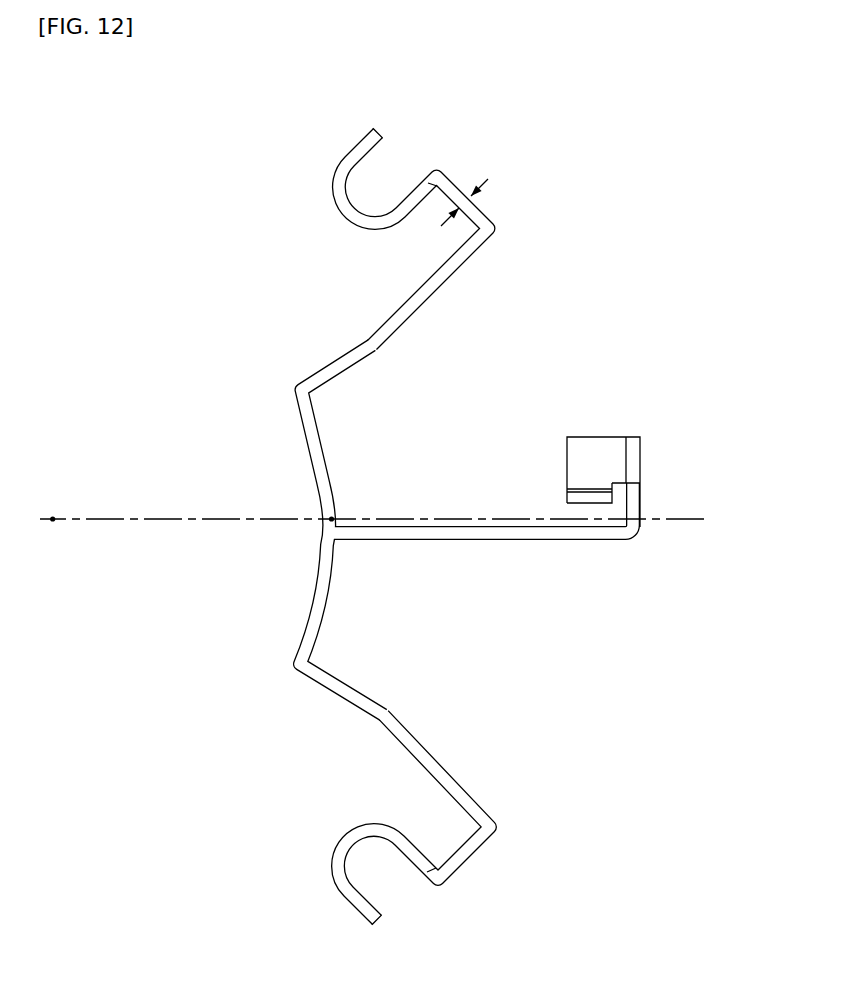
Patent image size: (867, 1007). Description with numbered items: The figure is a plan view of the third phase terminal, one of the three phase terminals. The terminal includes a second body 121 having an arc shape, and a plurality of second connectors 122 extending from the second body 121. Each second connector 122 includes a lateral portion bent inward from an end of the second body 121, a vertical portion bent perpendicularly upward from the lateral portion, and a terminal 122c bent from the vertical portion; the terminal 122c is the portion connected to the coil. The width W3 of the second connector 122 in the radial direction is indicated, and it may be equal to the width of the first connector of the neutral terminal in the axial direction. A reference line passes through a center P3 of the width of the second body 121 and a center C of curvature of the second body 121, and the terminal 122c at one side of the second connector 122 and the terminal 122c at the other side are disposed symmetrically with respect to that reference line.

The second body 121 is at (350, 417).
The second connector 122 is at (466, 162).
The terminal 122c is at (355, 150).
The width of the second connector W3 is at (487, 208).
The center of a width of the second body P3 is at (333, 516).
The center of curvature of the second body C is at (53, 522).